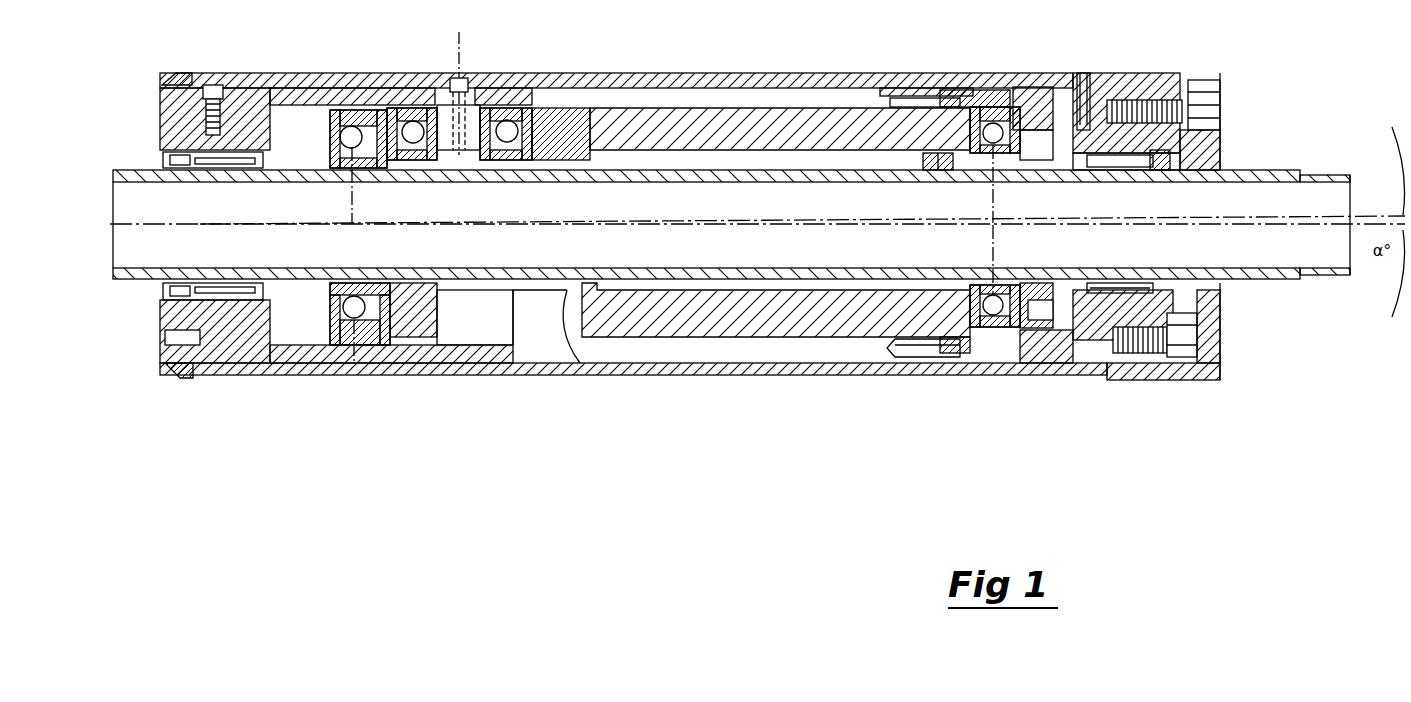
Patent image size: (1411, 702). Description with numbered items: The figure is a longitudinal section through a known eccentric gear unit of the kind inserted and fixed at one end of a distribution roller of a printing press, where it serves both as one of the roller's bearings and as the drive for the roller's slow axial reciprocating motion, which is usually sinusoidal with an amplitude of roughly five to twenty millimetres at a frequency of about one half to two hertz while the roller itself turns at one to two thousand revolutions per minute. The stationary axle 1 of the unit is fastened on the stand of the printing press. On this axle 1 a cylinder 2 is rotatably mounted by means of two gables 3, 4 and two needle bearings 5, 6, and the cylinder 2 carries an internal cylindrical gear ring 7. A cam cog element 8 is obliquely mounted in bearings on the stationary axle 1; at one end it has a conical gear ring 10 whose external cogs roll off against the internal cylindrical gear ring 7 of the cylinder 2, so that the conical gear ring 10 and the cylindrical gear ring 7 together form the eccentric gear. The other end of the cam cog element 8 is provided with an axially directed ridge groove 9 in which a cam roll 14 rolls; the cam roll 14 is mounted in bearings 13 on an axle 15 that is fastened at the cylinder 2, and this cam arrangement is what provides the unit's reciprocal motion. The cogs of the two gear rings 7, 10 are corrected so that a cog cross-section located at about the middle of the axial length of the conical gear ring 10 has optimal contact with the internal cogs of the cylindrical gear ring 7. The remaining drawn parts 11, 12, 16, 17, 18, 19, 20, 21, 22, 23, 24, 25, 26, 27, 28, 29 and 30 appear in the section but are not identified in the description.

The stationary axle 1 is at (1328, 277).
The cylinder 2 is at (930, 82).
The gable 3 is at (1083, 330).
The gable 4 is at (218, 360).
The needle bearing 5 is at (1140, 283).
The needle bearing 6 is at (182, 308).
The internal cylindrical gear ring 7 is at (918, 350).
The cam cog element 8 is at (813, 120).
The ridge groove 9 is at (532, 323).
The conical gear ring 10 is at (943, 370).
The recess 11 is at (437, 315).
The shoulder 12 is at (572, 315).
The bearings 13 is at (508, 126).
The cam roll 14 is at (527, 117).
The axle 15 is at (423, 110).
The flange 16 is at (305, 90).
The spacer ring 17 is at (300, 375).
The spacer 18 is at (447, 76).
The screw 19 is at (461, 52).
The bearing 20 is at (1017, 178).
The bearing 21 is at (330, 157).
The bearing 22 is at (975, 377).
The bearing 23 is at (358, 360).
The shaft axis 24 is at (1272, 232).
The housing axis 25 is at (1277, 217).
The bearing ring 26 is at (1025, 278).
The bearing ring 27 is at (327, 290).
The clamping screw 28 is at (1073, 177).
The bearing plane 29 is at (350, 203).
The collar 30 is at (947, 172).